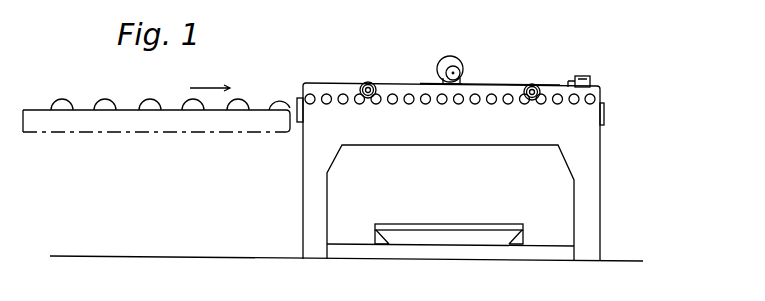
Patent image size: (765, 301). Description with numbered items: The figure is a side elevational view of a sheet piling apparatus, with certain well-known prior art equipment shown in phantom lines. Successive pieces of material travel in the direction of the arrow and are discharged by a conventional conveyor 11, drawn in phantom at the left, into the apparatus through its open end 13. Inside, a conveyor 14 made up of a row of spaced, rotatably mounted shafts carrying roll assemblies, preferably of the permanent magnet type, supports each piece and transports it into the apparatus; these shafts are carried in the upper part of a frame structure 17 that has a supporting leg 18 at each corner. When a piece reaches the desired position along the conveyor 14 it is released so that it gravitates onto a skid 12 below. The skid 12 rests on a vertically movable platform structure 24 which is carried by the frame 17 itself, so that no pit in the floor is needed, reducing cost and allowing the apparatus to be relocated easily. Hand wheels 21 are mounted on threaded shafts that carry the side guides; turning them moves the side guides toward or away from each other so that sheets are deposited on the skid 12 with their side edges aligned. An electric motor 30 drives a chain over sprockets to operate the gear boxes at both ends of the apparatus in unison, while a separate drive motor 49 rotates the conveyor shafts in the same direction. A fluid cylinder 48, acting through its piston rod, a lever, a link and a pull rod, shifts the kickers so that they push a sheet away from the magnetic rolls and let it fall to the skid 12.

The conveyor 11 is at (165, 135).
The skid 12 is at (492, 230).
The open end 13 is at (296, 92).
The conveyor 14 is at (413, 114).
The frame structure 17 is at (479, 118).
The supporting leg 18 is at (303, 221).
The hand wheel 21 is at (368, 82).
The platform structure 24 is at (502, 255).
The electric motor 30 is at (450, 56).
The fluid cylinder 48 is at (588, 76).
The drive motor 49 is at (463, 73).